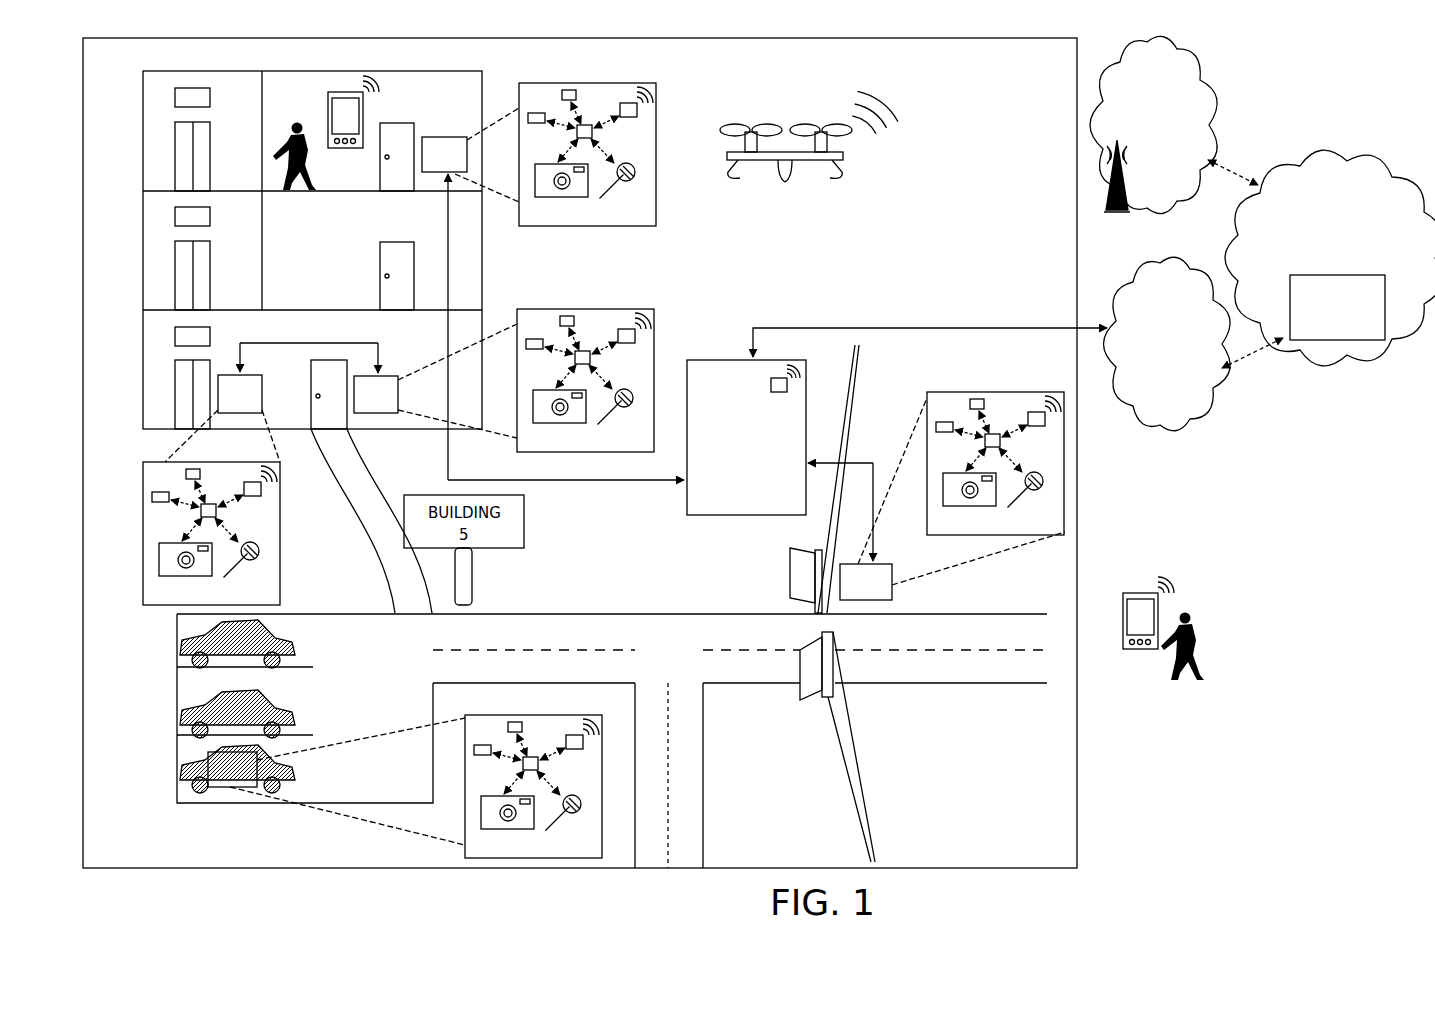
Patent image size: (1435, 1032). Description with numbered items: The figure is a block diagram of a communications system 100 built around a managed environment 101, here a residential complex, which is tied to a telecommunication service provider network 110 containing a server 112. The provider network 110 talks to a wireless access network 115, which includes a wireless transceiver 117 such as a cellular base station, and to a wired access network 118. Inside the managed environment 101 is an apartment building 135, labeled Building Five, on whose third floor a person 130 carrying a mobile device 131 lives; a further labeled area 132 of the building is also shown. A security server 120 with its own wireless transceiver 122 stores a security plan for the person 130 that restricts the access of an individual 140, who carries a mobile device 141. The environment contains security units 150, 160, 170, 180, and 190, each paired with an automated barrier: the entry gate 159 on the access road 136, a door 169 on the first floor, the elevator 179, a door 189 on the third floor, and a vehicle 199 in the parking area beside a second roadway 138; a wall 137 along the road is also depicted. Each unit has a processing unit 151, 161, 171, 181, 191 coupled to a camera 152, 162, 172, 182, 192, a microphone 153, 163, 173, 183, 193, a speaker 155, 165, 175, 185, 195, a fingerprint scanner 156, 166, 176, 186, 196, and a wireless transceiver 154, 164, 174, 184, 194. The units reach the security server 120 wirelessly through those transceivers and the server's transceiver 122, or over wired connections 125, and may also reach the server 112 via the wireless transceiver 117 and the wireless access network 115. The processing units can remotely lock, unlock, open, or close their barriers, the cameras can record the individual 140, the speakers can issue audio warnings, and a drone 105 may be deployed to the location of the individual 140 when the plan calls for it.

The system 100 is at (580, 472).
The managed environment 101 is at (999, 85).
The drone 105 is at (777, 176).
The telecommunication service provider network 110 is at (1330, 258).
The server 112 is at (1337, 307).
The wireless access network 115 is at (1153, 124).
The wireless transceiver 117 is at (1138, 215).
The access network 118 is at (1167, 344).
The security server 120 is at (746, 437).
The wireless transceiver 122 is at (780, 393).
The wired connections 125 is at (800, 328).
The person 130 is at (316, 168).
The mobile device 131 is at (328, 118).
The building floor area 132 is at (453, 94).
The apartment building 135 is at (143, 125).
The access road 136 is at (875, 654).
The wall 137 is at (858, 378).
The roadway 138 is at (612, 741).
The individual 140 is at (1162, 668).
The mobile device 141 is at (1140, 593).
The security unit 150 is at (952, 496).
The processing unit 151 is at (1018, 453).
The camera 152 is at (963, 504).
The microphone 153 is at (1030, 504).
The wireless transceiver 154 is at (1043, 426).
The speaker 155 is at (948, 446).
The fingerprint scanner 156 is at (997, 406).
The gate 159 is at (790, 580).
The security unit 160 is at (504, 380).
The processing unit 161 is at (608, 370).
The camera 162 is at (553, 421).
The microphone 163 is at (620, 421).
The wireless transceiver 164 is at (633, 343).
The speaker 165 is at (538, 363).
The fingerprint scanner 166 is at (587, 323).
The door 169 is at (311, 408).
The security unit 170 is at (211, 490).
The processing unit 171 is at (234, 523).
The camera 172 is at (179, 574).
The microphone 173 is at (246, 574).
The wireless transceiver 174 is at (259, 496).
The speaker 175 is at (164, 516).
The fingerprint scanner 176 is at (213, 476).
The elevator 179 is at (175, 393).
The security unit 180 is at (539, 154).
The processing unit 181 is at (610, 144).
The camera 182 is at (555, 195).
The microphone 183 is at (622, 195).
The wireless transceiver 184 is at (635, 117).
The speaker 185 is at (540, 137).
The fingerprint scanner 186 is at (589, 97).
The door 189 is at (416, 123).
The security unit 190 is at (405, 786).
The processing unit 191 is at (556, 776).
The camera 192 is at (501, 827).
The microphone 193 is at (568, 827).
The wireless transceiver 194 is at (581, 749).
The speaker 195 is at (486, 769).
The fingerprint scanner 196 is at (535, 729).
The vehicle 199 is at (180, 760).